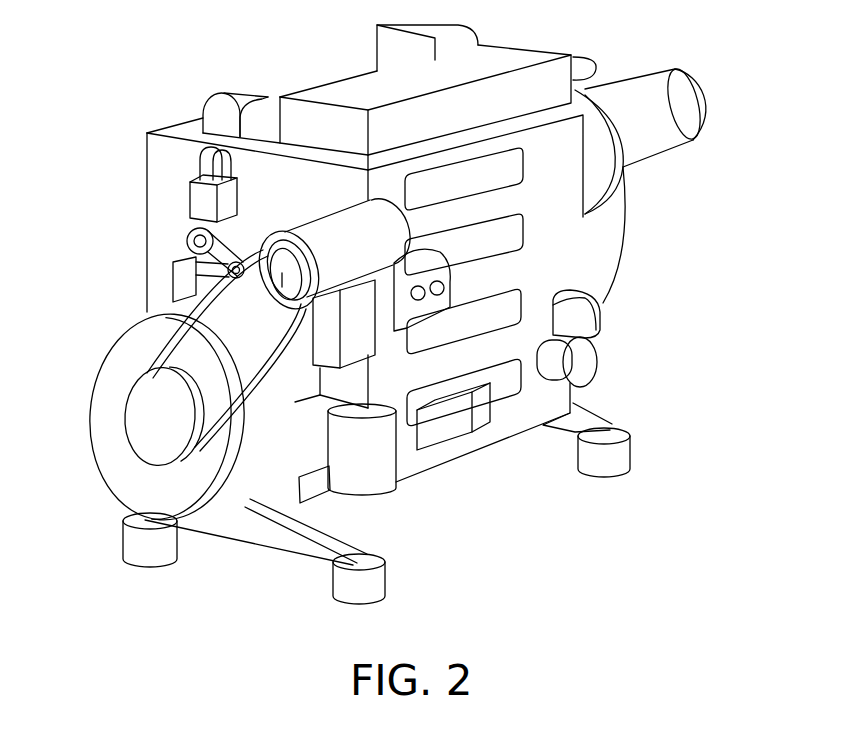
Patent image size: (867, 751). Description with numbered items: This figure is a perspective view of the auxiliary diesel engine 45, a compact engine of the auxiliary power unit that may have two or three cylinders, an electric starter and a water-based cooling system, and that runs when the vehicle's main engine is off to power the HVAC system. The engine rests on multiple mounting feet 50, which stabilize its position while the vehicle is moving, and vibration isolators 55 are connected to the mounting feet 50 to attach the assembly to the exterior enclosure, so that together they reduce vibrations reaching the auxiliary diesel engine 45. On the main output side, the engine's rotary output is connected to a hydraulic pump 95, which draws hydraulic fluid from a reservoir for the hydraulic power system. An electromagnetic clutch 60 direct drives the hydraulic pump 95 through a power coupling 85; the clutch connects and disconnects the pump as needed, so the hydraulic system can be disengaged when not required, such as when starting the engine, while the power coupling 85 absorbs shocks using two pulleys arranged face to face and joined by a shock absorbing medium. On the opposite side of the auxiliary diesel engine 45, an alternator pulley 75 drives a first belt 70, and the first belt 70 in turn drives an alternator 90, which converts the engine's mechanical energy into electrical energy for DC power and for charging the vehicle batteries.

The auxiliary diesel engine 45 is at (128, 110).
The mounting feet 50 is at (313, 573).
The vibration isolators 55 is at (123, 545).
The electromagnetic clutch 60 is at (710, 93).
The first belt 70 is at (153, 353).
The alternator pulley 75 is at (105, 460).
The power coupling 85 is at (215, 270).
The alternator 90 is at (342, 218).
The hydraulic pump 95 is at (645, 97).